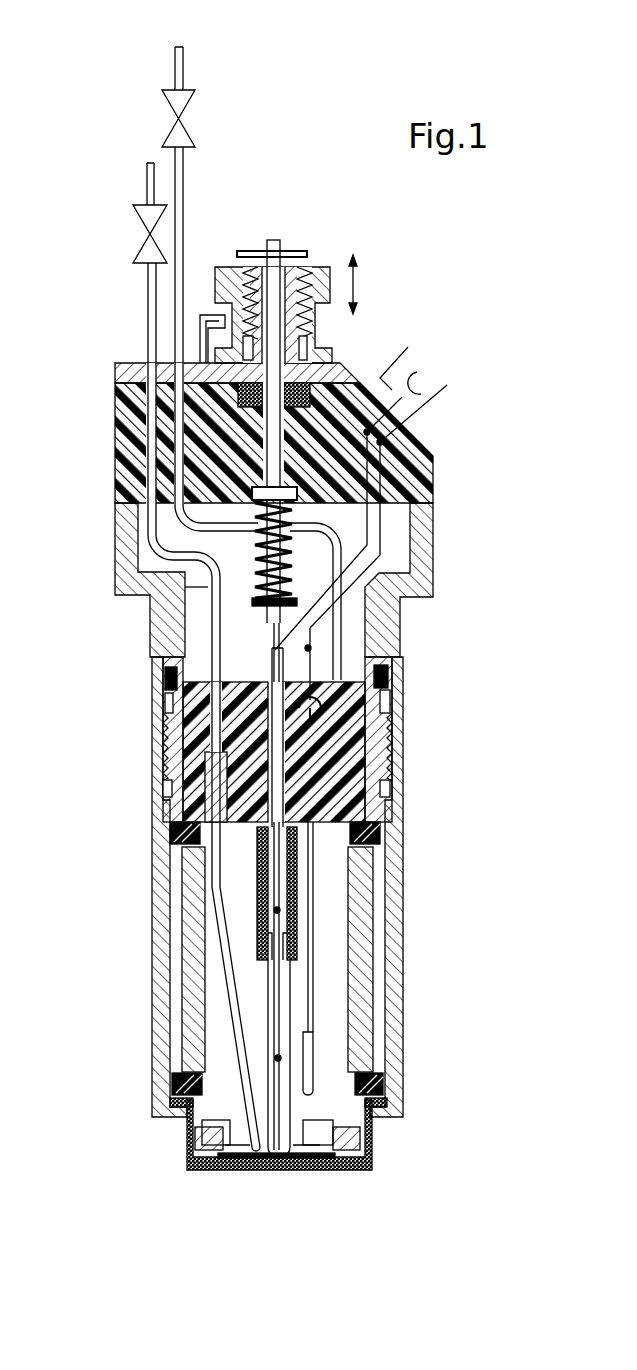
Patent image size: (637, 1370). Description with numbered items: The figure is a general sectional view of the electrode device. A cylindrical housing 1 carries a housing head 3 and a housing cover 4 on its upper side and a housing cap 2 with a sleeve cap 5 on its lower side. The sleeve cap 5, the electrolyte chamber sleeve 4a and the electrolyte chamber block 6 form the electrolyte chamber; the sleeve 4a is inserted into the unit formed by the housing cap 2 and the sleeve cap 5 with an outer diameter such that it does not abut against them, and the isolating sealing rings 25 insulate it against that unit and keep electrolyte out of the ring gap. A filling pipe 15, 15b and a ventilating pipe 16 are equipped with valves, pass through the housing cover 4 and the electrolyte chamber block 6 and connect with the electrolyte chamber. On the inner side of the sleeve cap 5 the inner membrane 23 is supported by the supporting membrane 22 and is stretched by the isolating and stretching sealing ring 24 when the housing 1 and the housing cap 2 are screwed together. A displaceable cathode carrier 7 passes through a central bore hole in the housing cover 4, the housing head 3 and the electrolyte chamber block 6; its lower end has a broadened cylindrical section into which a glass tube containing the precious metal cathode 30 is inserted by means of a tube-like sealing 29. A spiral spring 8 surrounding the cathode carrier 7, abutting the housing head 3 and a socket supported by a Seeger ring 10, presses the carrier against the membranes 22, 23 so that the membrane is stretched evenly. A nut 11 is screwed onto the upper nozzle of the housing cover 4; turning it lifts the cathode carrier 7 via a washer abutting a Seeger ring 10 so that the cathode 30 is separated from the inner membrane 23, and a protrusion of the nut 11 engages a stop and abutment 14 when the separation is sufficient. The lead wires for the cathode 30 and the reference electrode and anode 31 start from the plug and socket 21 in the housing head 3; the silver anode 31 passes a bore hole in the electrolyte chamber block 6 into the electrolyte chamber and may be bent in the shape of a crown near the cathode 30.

The cylindrical housing 1 is at (115, 567).
The housing cap 2 is at (158, 897).
The housing head 3 is at (115, 450).
The housing cover 4 is at (115, 362).
The electrolyte chamber sleeve 4a is at (193, 877).
The sleeve cap 5 is at (186, 1170).
The electrolyte chamber block 6 is at (200, 738).
The cathode carrier 7 is at (281, 240).
The spring 8 is at (262, 561).
The Seeger ring 10 is at (298, 251).
The nut 11 is at (323, 268).
The stop and abutment 14 is at (212, 316).
The filling pipe 15 is at (156, 657).
The filling pipe 15b is at (147, 300).
The ventilating pipe 16 is at (178, 168).
The plug and socket 21 is at (430, 380).
The supporting membrane 22 is at (372, 1170).
The inner membrane 23 is at (370, 1157).
The isolating and stretching sealing ring 24 is at (372, 1137).
The isolating sealing rings 25 is at (378, 833).
The tube-like sealing 29 is at (293, 960).
The cathode 30 is at (281, 1158).
The reference electrode and anode 31 is at (307, 1042).